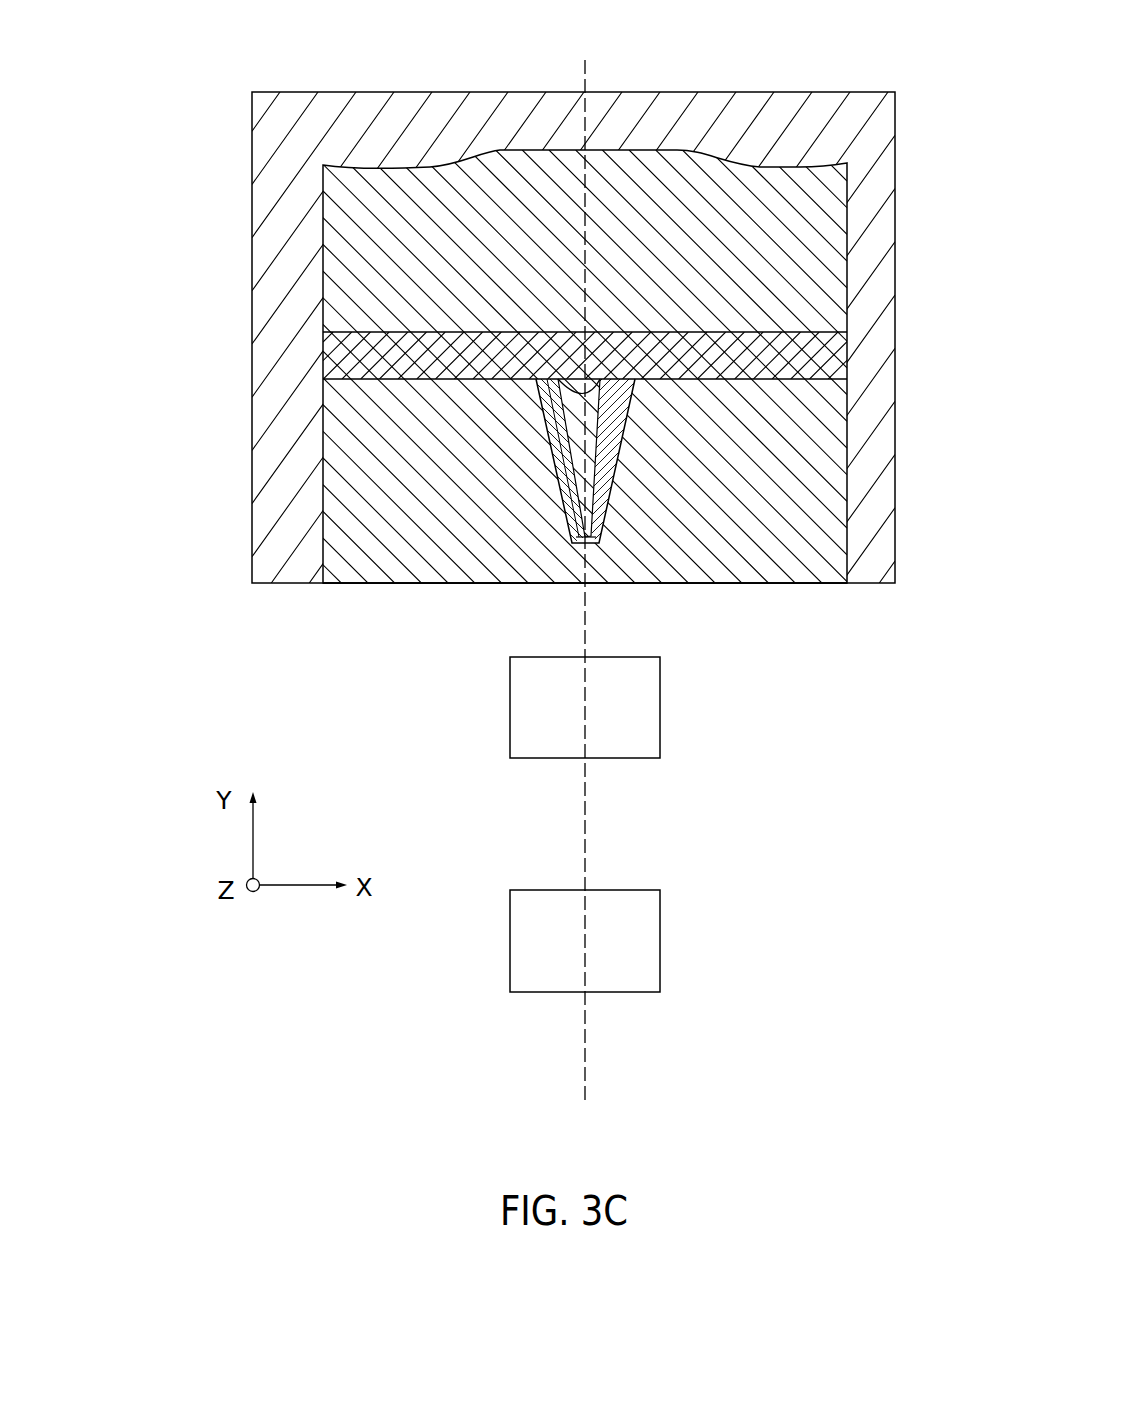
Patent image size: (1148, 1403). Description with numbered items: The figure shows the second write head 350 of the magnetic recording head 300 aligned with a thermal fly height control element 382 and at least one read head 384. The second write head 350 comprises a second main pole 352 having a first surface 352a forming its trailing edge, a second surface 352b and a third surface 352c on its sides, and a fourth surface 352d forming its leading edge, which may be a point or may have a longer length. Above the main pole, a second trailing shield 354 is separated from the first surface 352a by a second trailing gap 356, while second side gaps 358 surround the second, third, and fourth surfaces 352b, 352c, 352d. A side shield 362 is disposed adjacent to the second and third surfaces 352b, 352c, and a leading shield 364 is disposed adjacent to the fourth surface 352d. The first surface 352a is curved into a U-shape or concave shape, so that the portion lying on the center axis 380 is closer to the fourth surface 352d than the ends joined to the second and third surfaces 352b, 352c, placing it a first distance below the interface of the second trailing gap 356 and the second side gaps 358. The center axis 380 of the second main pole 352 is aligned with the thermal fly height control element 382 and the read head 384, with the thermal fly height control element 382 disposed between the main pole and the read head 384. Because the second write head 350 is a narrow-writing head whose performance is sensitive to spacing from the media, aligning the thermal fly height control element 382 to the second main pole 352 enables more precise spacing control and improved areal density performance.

The magnetic recording head 300 is at (186, 44).
The second write head 350 is at (229, 308).
The second trailing shield 354 is at (737, 259).
The second trailing gap 356 is at (441, 366).
The second main pole 352 is at (577, 412).
The first surface 352a is at (583, 386).
The second surface 352b is at (560, 452).
The third surface 352c is at (614, 453).
The fourth surface 352d is at (573, 542).
The second side gaps 358 is at (567, 490).
The side shield 362 is at (387, 436).
The leading shield 364 is at (657, 572).
The center axis 380 is at (585, 1063).
The thermal fly height control element 382 is at (567, 738).
The read head 384 is at (567, 973).